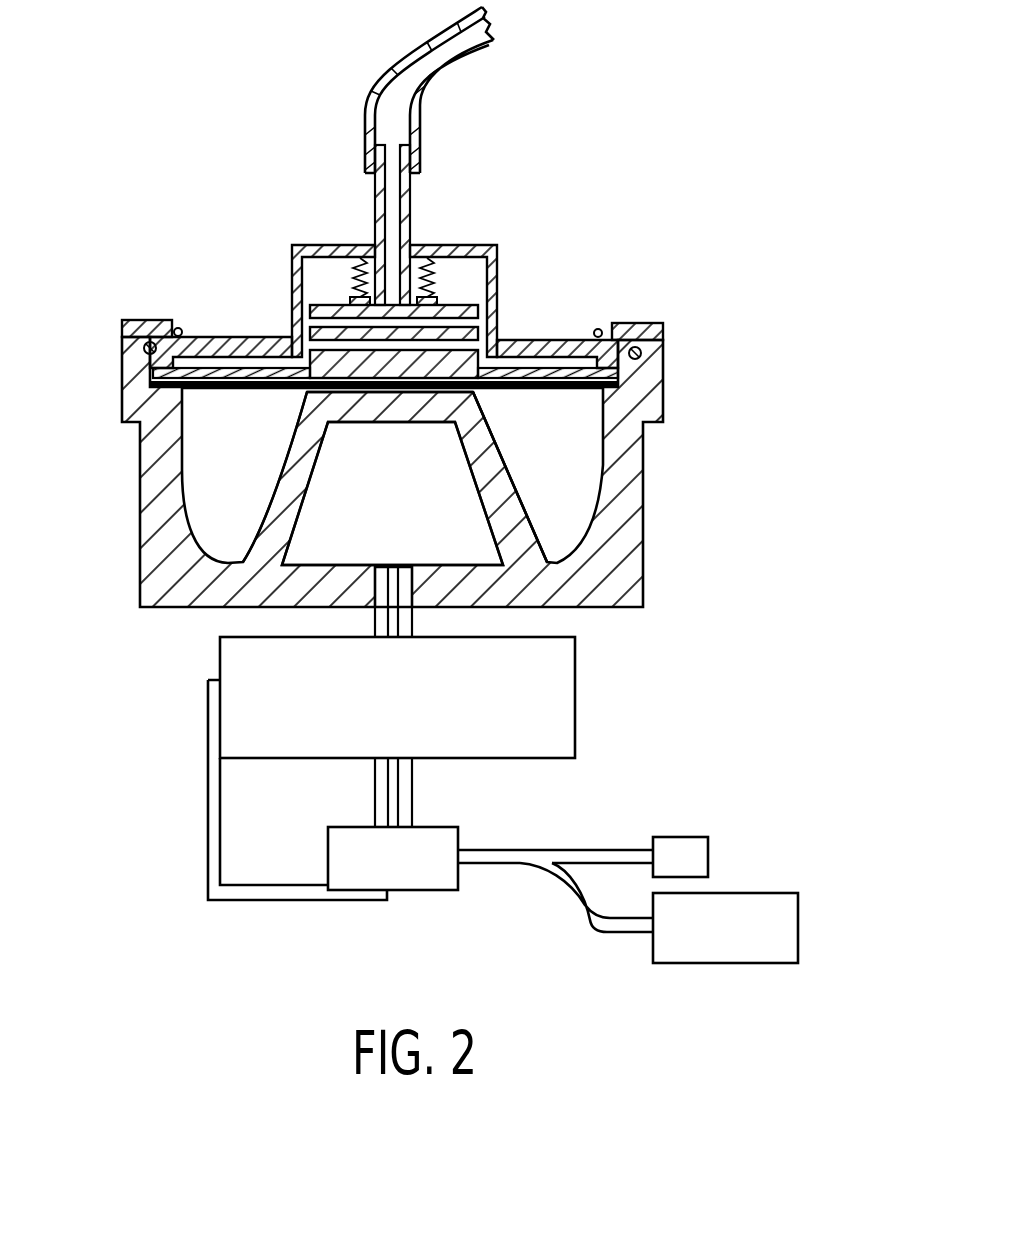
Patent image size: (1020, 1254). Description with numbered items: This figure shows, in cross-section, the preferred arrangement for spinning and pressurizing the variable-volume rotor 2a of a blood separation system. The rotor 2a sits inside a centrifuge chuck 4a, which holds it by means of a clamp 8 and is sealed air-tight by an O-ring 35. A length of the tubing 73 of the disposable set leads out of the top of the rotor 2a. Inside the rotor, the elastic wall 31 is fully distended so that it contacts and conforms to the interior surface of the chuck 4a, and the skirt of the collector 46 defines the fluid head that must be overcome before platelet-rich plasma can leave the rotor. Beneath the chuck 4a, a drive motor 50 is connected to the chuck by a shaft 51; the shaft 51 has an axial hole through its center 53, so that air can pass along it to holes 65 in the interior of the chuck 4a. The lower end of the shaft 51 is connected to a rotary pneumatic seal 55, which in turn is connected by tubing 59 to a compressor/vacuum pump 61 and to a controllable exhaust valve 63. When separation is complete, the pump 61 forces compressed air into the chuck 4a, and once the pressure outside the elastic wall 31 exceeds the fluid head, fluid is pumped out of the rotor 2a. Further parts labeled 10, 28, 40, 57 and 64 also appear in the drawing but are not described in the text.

The variable-volume rotor 2a is at (435, 259).
The centrifuge chuck 4a is at (157, 497).
The clamp 8 is at (143, 327).
The lid 10 is at (204, 346).
The housing wall 28 is at (500, 275).
The elastic wall 31 is at (541, 386).
The O-ring 35 is at (147, 351).
The plate 40 is at (244, 372).
The collector 46 is at (320, 305).
The drive motor 50 is at (572, 694).
The shaft 51 is at (408, 617).
The axial hole 53 is at (397, 790).
The rotary pneumatic seal 55 is at (428, 883).
The bracket 57 is at (213, 823).
The tubing 59 is at (562, 896).
The compressor/vacuum pump 61 is at (793, 934).
The controllable exhaust valve 63 is at (703, 847).
The rotor hub 64 is at (492, 510).
The holes 65 is at (468, 400).
The tubing 73 is at (400, 68).